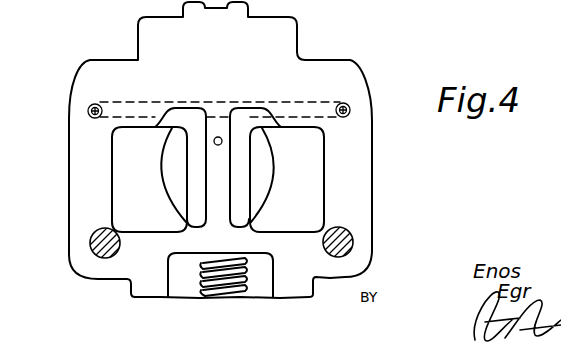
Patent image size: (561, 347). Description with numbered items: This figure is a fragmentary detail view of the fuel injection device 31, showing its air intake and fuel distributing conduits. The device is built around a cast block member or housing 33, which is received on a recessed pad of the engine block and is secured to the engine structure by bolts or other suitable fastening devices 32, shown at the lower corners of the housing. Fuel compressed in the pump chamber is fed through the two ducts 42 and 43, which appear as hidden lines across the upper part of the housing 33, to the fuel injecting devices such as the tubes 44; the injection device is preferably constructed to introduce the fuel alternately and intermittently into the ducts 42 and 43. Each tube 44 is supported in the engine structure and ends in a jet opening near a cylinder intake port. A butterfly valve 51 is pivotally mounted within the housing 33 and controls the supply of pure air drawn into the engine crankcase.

The fuel injection device 31 is at (372, 161).
The fastening devices 32 is at (102, 258).
The housing 33 is at (290, 90).
The duct 42 is at (312, 102).
The duct 43 is at (132, 100).
The tubes 44 is at (86, 112).
The butterfly valve 51 is at (277, 172).